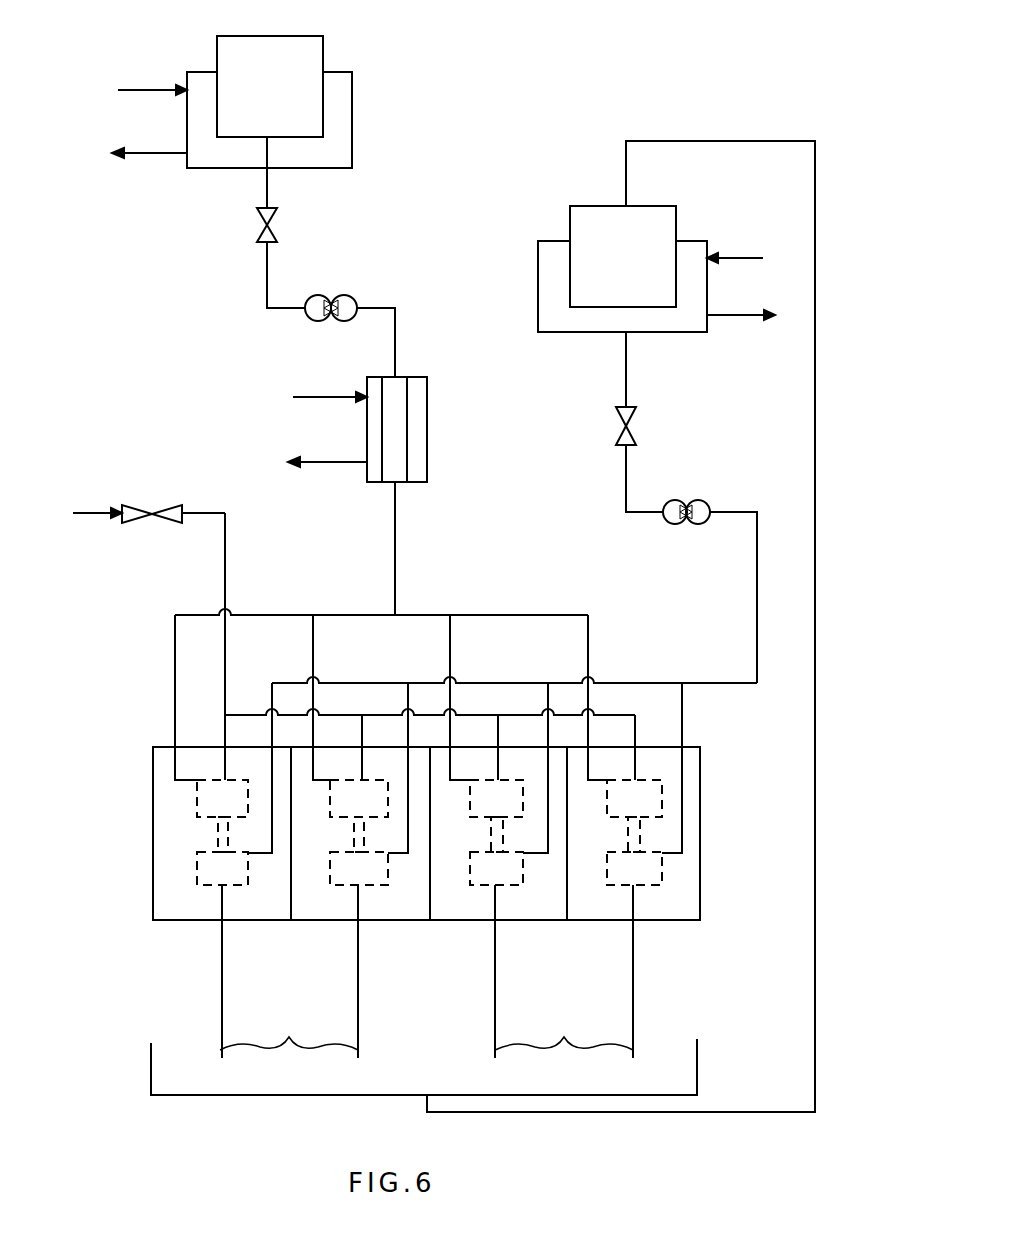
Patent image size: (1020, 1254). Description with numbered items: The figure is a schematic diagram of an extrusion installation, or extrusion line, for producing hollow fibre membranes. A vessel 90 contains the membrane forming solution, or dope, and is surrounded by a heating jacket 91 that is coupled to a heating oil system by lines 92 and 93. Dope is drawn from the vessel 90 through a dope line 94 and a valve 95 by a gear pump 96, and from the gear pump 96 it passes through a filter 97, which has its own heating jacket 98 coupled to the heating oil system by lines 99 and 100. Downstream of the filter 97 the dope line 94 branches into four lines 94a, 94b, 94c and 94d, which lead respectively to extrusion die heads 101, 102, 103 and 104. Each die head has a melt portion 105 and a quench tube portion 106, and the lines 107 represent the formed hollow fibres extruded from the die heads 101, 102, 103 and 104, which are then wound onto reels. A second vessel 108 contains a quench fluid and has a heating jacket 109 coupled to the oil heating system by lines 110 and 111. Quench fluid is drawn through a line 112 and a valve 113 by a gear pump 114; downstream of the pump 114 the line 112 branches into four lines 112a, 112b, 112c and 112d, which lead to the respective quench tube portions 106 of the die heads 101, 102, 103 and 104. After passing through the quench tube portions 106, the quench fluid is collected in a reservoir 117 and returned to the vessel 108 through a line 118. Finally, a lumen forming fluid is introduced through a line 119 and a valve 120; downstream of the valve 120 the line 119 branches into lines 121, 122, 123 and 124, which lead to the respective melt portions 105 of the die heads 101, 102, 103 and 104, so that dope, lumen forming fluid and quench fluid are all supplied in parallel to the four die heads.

The vessel 90 is at (252, 88).
The heating jacket 91 is at (352, 128).
The line 92 is at (122, 90).
The line 93 is at (146, 153).
The dope line 94 is at (268, 186).
The dope branch line 94a is at (175, 700).
The dope branch line 94b is at (314, 652).
The dope branch line 94c is at (452, 652).
The dope branch line 94d is at (590, 637).
The valve 95 is at (278, 226).
The gear pump 96 is at (333, 296).
The filter 97 is at (398, 377).
The heating jacket 98 is at (400, 406).
The line 99 is at (312, 396).
The line 100 is at (330, 462).
The extrusion die head 101 is at (203, 922).
The extrusion die head 102 is at (330, 922).
The extrusion die head 103 is at (478, 922).
The extrusion die head 104 is at (620, 922).
The melt portion 105 is at (197, 797).
The quench tube portion 106 is at (197, 887).
The hollow fibres 107 is at (426, 971).
The vessel 108 is at (604, 260).
The heating jacket 109 is at (678, 333).
The line 110 is at (740, 258).
The line 111 is at (727, 317).
The quench fluid line 112 is at (628, 386).
The quench fluid branch line 112a is at (270, 700).
The quench fluid branch line 112b is at (408, 698).
The quench fluid branch line 112c is at (548, 698).
The quench fluid branch line 112d is at (684, 712).
The valve 113 is at (616, 433).
The gear pump 114 is at (688, 500).
The reservoir 117 is at (697, 1047).
The line 118 is at (813, 815).
The line 119 is at (85, 513).
The valve 120 is at (152, 523).
The lumen fluid branch line 121 is at (225, 730).
The lumen fluid branch line 122 is at (338, 704).
The lumen fluid branch line 123 is at (473, 704).
The lumen fluid branch line 124 is at (637, 730).